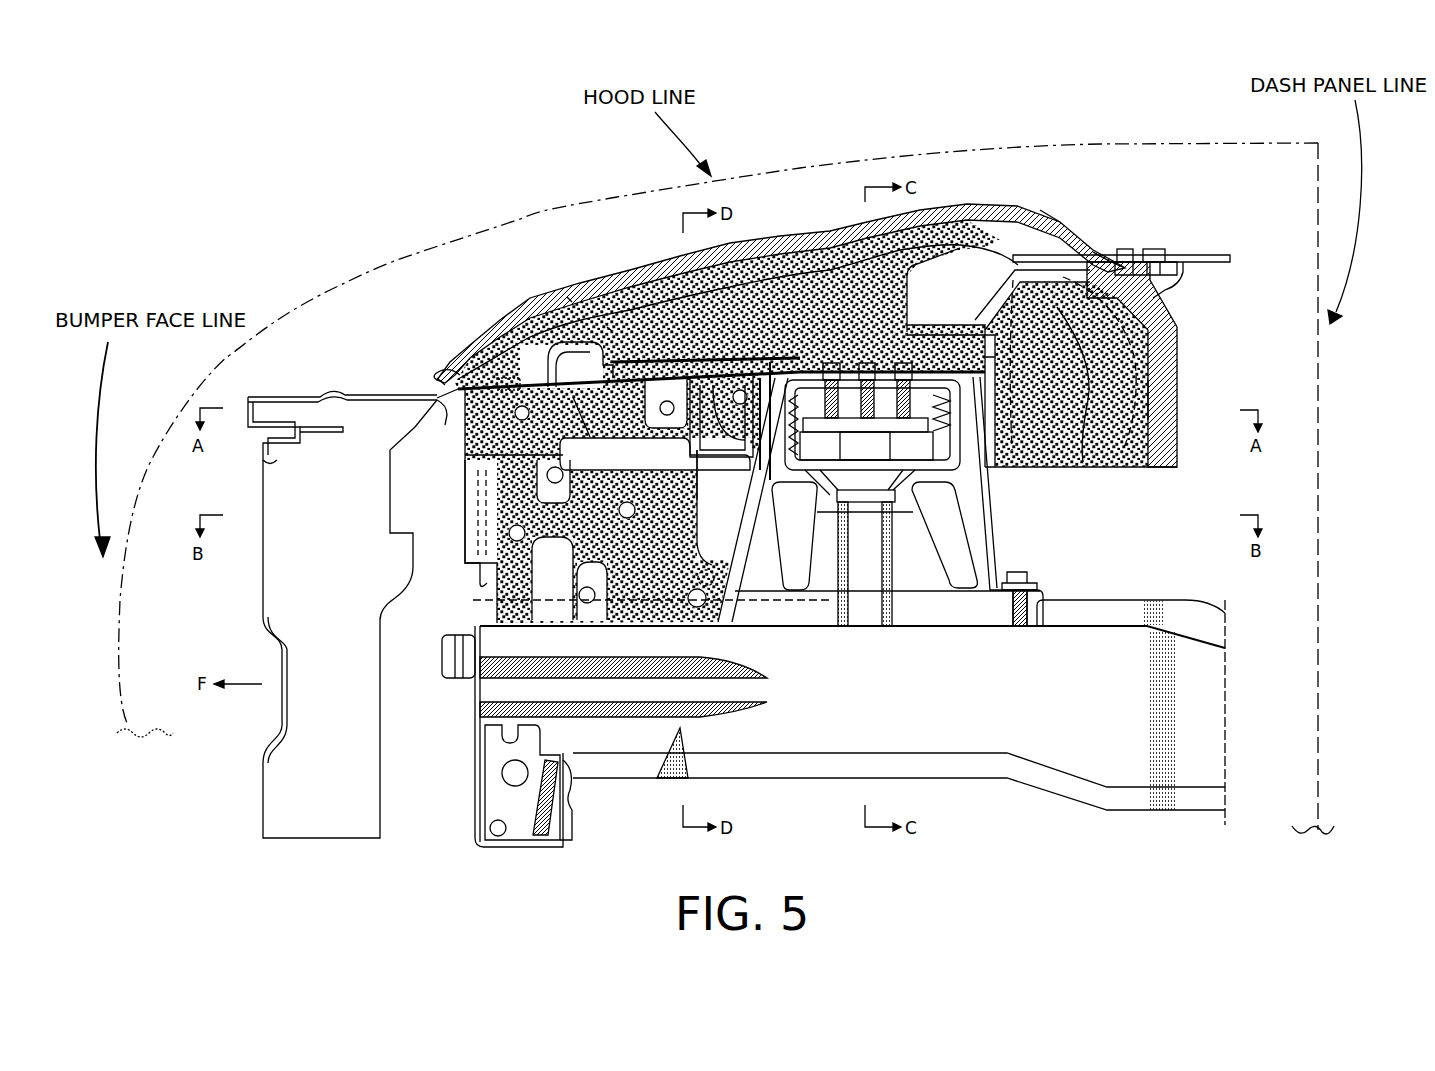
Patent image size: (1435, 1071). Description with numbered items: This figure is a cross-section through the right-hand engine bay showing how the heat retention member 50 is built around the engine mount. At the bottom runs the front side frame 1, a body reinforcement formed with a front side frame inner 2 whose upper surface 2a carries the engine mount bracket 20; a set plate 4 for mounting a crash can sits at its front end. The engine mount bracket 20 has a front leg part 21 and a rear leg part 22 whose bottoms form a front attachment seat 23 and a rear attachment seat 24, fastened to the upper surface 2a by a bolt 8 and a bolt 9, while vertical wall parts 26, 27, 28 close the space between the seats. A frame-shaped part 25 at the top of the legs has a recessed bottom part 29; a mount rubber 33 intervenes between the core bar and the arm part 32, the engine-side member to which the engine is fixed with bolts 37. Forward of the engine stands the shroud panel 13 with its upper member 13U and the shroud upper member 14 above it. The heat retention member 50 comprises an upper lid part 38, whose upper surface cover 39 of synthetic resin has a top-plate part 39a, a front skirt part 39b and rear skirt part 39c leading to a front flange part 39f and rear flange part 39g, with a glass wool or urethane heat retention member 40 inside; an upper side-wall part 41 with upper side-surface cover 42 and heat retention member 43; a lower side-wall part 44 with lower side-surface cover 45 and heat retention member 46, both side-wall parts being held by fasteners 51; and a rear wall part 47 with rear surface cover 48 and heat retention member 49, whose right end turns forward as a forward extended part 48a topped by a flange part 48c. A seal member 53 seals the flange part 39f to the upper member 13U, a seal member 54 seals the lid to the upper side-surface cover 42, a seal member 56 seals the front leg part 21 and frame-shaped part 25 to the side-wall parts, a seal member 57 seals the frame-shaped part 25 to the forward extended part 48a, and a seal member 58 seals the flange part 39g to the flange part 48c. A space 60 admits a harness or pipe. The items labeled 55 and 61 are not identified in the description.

The front side frame 1 is at (1236, 724).
The front side frame inner 2 is at (852, 588).
The upper surface 2a is at (1065, 600).
The set plate 4 is at (475, 728).
The bolt 8 is at (703, 570).
The bolt 9 is at (1024, 578).
The shroud panel 13 is at (342, 574).
The upper member 13U is at (413, 392).
The shroud upper member 14 is at (270, 397).
The engine mount bracket 20 is at (907, 513).
The front leg part 21 is at (812, 537).
The rear leg part 22 is at (990, 513).
The front attachment seat 23 is at (732, 612).
The rear attachment seat 24 is at (1030, 612).
The frame-shaped part 25 is at (795, 372).
The vertical wall part 26 is at (697, 500).
The vertical wall part 27 is at (968, 557).
The vertical wall part 28 is at (866, 628).
The recessed bottom part 29 is at (906, 512).
The arm part 32 is at (922, 397).
The mount rubber 33 is at (902, 478).
The bolts 37 is at (858, 370).
The upper lid part 38 is at (787, 280).
The upper surface cover 39 is at (787, 280).
The top-plate part 39a is at (810, 250).
The skirt part 39b is at (460, 348).
The skirt part 39c is at (1065, 226).
The flange part 39f is at (437, 372).
The flange part 39g is at (1105, 255).
The heat retention member 40 is at (607, 327).
The upper side-wall part 41 is at (721, 344).
The upper side-surface cover 42 is at (667, 385).
The heat retention member 43 is at (624, 400).
The lower side-wall part 44 is at (623, 664).
The lower side-surface cover 45 is at (623, 687).
The heat retention member 46 is at (638, 606).
The rear wall part 47 is at (1184, 364).
The rear surface cover 48 is at (1180, 360).
The forward extended part 48a is at (988, 318).
The flange part 48c is at (1075, 315).
The heat retention member 49 is at (1130, 398).
The heat retention member 50 is at (658, 254).
The fasteners 51 is at (669, 400).
The seal member 53 is at (447, 415).
The seal member 54 is at (502, 385).
The vertical wall 55 is at (812, 368).
The seal member 56 is at (762, 504).
The seal member 57 is at (997, 430).
The seal member 58 is at (1148, 258).
The space 60 is at (553, 345).
The space 61 is at (947, 306).